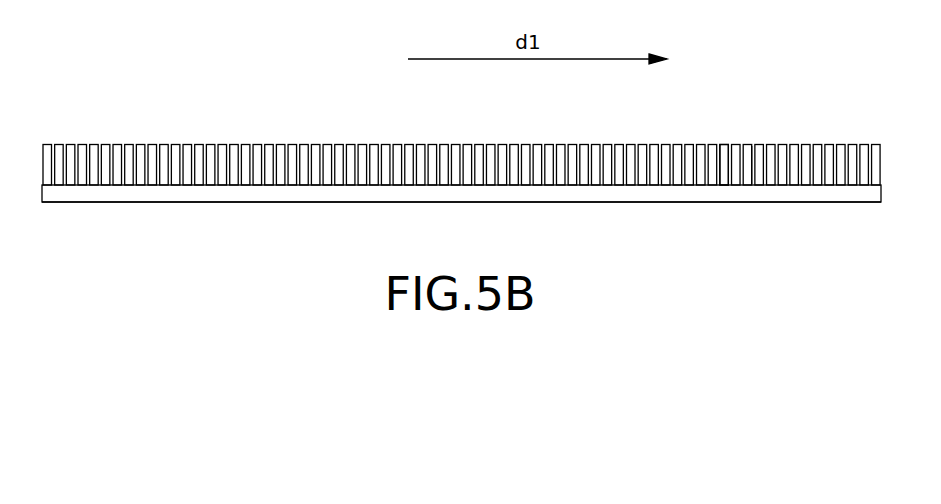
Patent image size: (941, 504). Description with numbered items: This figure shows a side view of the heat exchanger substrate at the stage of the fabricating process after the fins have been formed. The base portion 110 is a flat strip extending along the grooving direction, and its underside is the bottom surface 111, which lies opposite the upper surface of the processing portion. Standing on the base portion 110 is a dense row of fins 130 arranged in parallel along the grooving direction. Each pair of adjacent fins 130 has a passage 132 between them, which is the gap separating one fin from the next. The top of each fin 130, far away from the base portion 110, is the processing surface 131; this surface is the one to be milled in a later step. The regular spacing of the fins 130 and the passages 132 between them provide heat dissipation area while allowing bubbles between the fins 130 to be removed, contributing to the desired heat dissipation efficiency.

The base portion 110 is at (882, 190).
The bottom surface 111 is at (602, 202).
The fins 130 is at (882, 163).
The processing surface 131 is at (720, 145).
The passage 132 is at (750, 147).